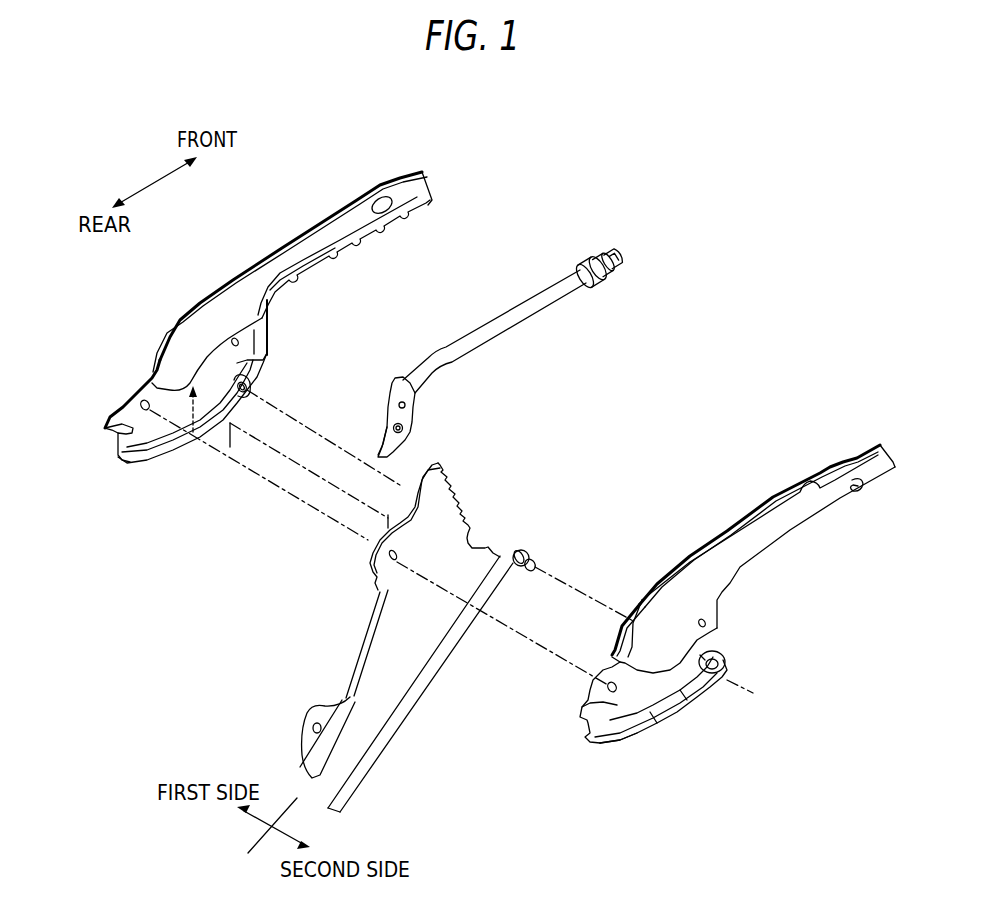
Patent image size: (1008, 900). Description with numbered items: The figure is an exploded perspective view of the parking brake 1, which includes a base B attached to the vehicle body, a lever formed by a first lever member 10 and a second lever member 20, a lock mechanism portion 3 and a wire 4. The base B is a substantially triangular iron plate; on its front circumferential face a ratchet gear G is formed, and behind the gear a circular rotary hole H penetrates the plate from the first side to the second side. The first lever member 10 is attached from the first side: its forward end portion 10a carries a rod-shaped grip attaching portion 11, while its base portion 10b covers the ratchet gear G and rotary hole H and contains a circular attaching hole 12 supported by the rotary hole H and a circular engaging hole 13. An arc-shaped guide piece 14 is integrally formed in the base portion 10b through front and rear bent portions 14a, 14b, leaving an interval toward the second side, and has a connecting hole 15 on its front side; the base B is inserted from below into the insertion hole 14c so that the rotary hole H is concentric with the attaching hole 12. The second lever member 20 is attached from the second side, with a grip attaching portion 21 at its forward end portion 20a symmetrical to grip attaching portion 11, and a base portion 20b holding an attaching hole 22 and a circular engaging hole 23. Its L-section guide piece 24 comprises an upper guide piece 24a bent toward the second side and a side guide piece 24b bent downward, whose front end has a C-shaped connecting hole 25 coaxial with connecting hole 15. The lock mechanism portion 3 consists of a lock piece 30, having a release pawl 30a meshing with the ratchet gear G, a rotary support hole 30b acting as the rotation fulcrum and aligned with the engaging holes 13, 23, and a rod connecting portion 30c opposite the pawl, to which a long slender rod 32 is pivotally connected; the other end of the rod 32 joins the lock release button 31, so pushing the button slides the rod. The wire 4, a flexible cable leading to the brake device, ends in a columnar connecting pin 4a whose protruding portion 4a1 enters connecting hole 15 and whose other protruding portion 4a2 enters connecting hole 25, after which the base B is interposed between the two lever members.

The parking brake 1 is at (771, 187).
The lock mechanism portion 3 is at (531, 305).
The wire 4 is at (464, 655).
The connecting pin 4a is at (547, 535).
The protruding portion 4a1 is at (519, 550).
The protruding portion 4a2 is at (540, 560).
The first lever member 10 is at (475, 487).
The forward end portion 10a is at (277, 268).
The base portion 10b is at (172, 340).
The grip attaching portion 11 is at (343, 253).
The attaching hole 12 is at (145, 405).
The engaging hole 13 is at (238, 343).
The guide piece 14 is at (147, 460).
The bent portion 14a is at (268, 354).
The bent portion 14b is at (116, 438).
The insertion hole 14c is at (196, 445).
The connecting hole 15 is at (252, 387).
The second lever member 20 is at (716, 621).
The forward end portion 20a is at (838, 507).
The base portion 20b is at (640, 610).
The grip attaching portion 21 is at (782, 530).
The attaching hole 22 is at (588, 705).
The engaging hole 23 is at (708, 624).
The guide piece 24 is at (690, 695).
The upper guide piece 24a is at (623, 740).
The side guide piece 24b is at (655, 725).
The connecting hole 25 is at (726, 668).
The lock piece 30 is at (416, 388).
The release pawl 30a is at (378, 450).
The rotary support hole 30b is at (402, 430).
The rod connecting portion 30c is at (410, 404).
The lock release button 31 is at (605, 258).
The rod 32 is at (518, 313).
The ratchet gear G is at (460, 473).
The rotary hole H is at (388, 568).
The base B is at (366, 645).